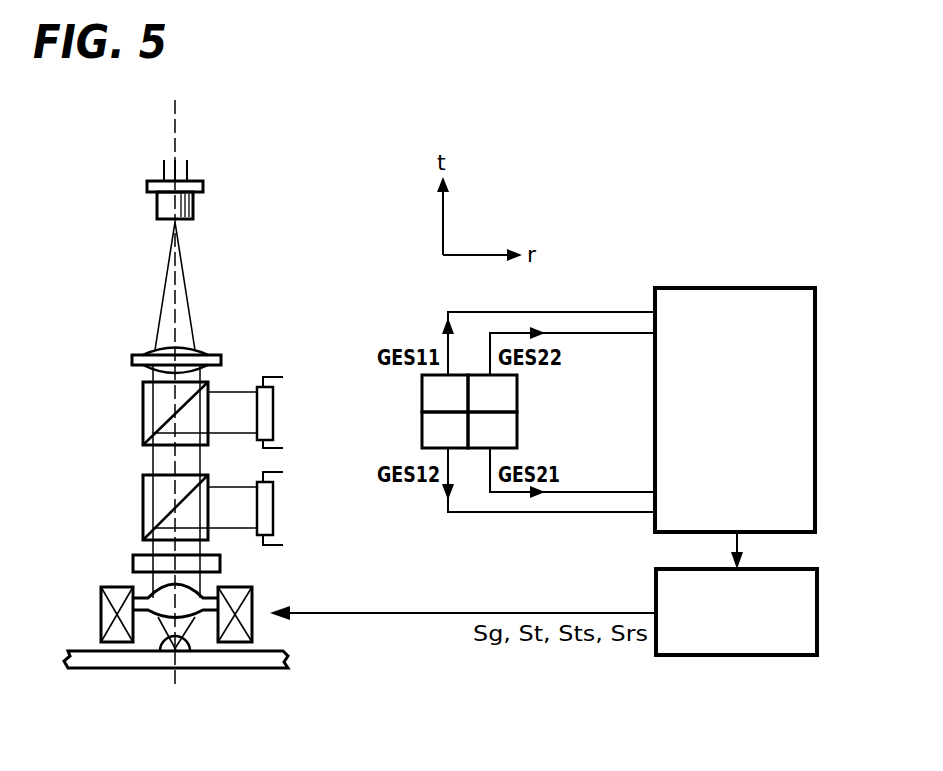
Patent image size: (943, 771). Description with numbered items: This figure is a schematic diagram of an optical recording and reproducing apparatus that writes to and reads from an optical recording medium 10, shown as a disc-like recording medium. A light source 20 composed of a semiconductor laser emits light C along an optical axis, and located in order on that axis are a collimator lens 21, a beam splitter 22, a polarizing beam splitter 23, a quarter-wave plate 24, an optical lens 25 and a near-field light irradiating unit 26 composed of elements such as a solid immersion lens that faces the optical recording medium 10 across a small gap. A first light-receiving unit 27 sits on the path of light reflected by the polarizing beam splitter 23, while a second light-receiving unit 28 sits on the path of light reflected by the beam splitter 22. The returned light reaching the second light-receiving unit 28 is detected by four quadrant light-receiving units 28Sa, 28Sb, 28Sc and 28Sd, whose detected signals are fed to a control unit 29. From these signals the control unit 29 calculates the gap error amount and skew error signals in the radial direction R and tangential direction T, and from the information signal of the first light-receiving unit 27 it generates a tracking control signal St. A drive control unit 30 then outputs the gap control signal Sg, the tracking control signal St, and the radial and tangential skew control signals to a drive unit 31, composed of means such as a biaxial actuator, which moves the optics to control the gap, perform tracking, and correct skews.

The optical recording medium 10 is at (268, 668).
The light source 20 is at (212, 200).
The collimator lens 21 is at (122, 360).
The beam splitter 22 is at (133, 402).
The polarizing beam splitter 23 is at (130, 487).
The quarter-wave plate 24 is at (230, 567).
The optical lens 25 is at (150, 586).
The near-field light irradiating unit 26 is at (198, 642).
The first light-receiving unit 27 is at (283, 493).
The second light-receiving unit 28 is at (282, 391).
The light-receiving unit 28Sa is at (421, 401).
The light-receiving unit 28Sb is at (421, 433).
The light-receiving unit 28Sc is at (517, 436).
The light-receiving unit 28Sd is at (517, 393).
The control unit 29 is at (735, 288).
The drive control unit 30 is at (737, 655).
The drive unit 31 is at (253, 600).
The light beam optical path C is at (173, 272).